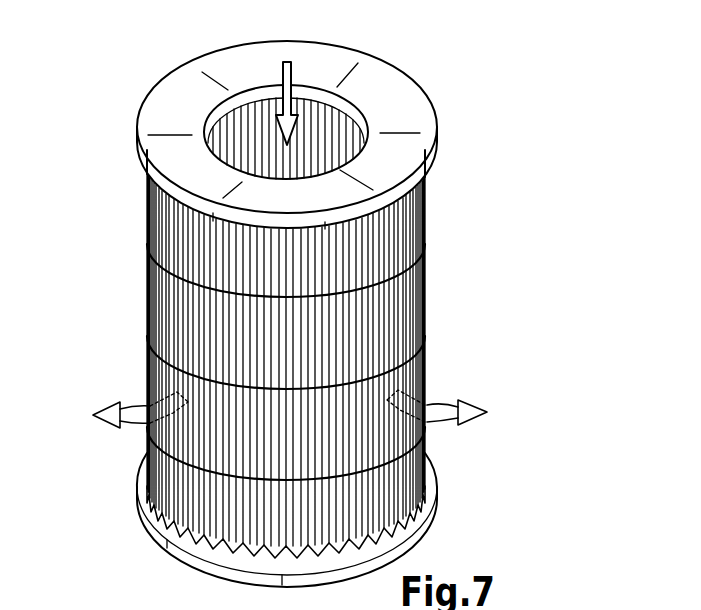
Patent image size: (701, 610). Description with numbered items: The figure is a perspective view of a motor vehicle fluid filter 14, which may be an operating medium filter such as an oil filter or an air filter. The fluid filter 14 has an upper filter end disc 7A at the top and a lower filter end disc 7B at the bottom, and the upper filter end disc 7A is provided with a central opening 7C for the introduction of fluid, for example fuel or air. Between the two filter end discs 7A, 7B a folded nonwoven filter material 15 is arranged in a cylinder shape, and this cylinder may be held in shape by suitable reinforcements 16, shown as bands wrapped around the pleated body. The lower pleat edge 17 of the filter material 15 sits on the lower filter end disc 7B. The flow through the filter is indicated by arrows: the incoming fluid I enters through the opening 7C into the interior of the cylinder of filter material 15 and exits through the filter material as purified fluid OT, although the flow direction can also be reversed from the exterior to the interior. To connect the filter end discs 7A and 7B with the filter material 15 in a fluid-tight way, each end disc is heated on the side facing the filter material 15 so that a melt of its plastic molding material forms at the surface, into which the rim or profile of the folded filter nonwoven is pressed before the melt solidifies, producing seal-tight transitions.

The fluid filter 14 is at (486, 195).
The folded nonwoven filter material 15 is at (397, 319).
The reinforcements 16 is at (138, 243).
The lower pleat edge 17 is at (415, 500).
The upper filter end disc 7A is at (412, 118).
The lower filter end disc 7B is at (157, 517).
The opening 7C is at (352, 98).
The incoming fluid I is at (283, 73).
The purified fluid OT is at (293, 411).